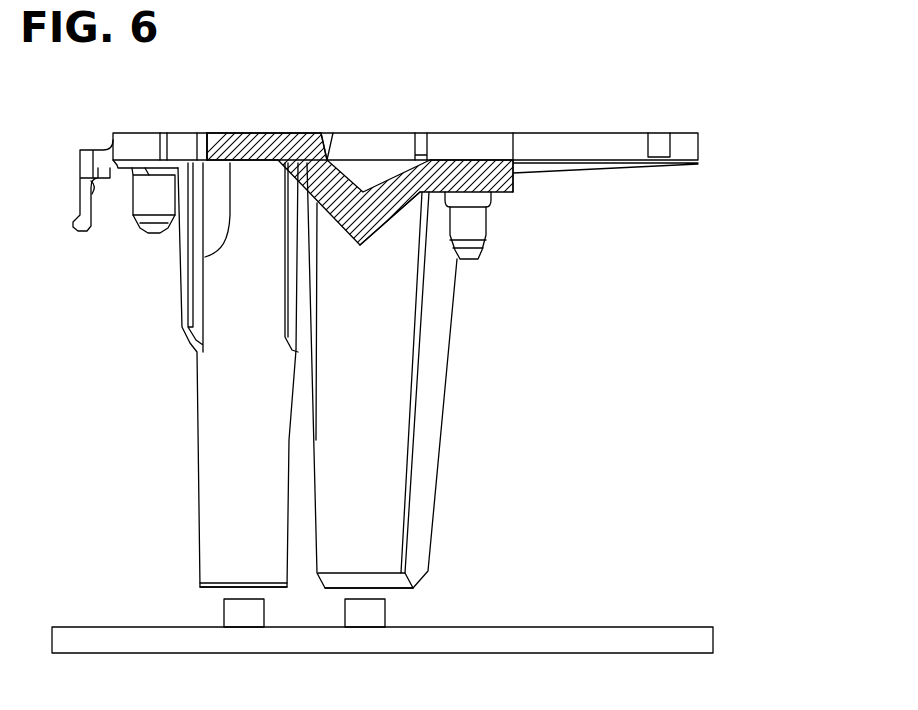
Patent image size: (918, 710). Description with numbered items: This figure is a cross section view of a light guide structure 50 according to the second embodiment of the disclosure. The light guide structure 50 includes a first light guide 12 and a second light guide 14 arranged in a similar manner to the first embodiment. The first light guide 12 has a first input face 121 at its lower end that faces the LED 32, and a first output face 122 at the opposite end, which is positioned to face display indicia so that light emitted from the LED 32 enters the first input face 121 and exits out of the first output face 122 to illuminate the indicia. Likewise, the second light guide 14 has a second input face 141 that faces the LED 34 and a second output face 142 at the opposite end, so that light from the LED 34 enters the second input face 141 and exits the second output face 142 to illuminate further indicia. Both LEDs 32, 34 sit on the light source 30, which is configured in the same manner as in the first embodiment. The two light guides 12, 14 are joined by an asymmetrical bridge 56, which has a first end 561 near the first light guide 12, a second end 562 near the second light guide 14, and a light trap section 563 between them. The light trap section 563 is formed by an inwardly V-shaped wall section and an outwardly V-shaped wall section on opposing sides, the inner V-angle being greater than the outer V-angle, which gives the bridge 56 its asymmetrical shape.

The light guide structure 50 is at (690, 133).
The first output face 122 is at (213, 133).
The second output face 142 is at (402, 133).
The bridge 56 is at (340, 223).
The first end 561 is at (212, 252).
The second end 562 is at (513, 192).
The light trap section 563 is at (376, 232).
The first light guide 12 is at (193, 450).
The second light guide 14 is at (440, 447).
The first input face 121 is at (203, 590).
The second input face 141 is at (402, 586).
The LED 32 is at (224, 613).
The LED 34 is at (385, 612).
The light source 30 is at (670, 627).